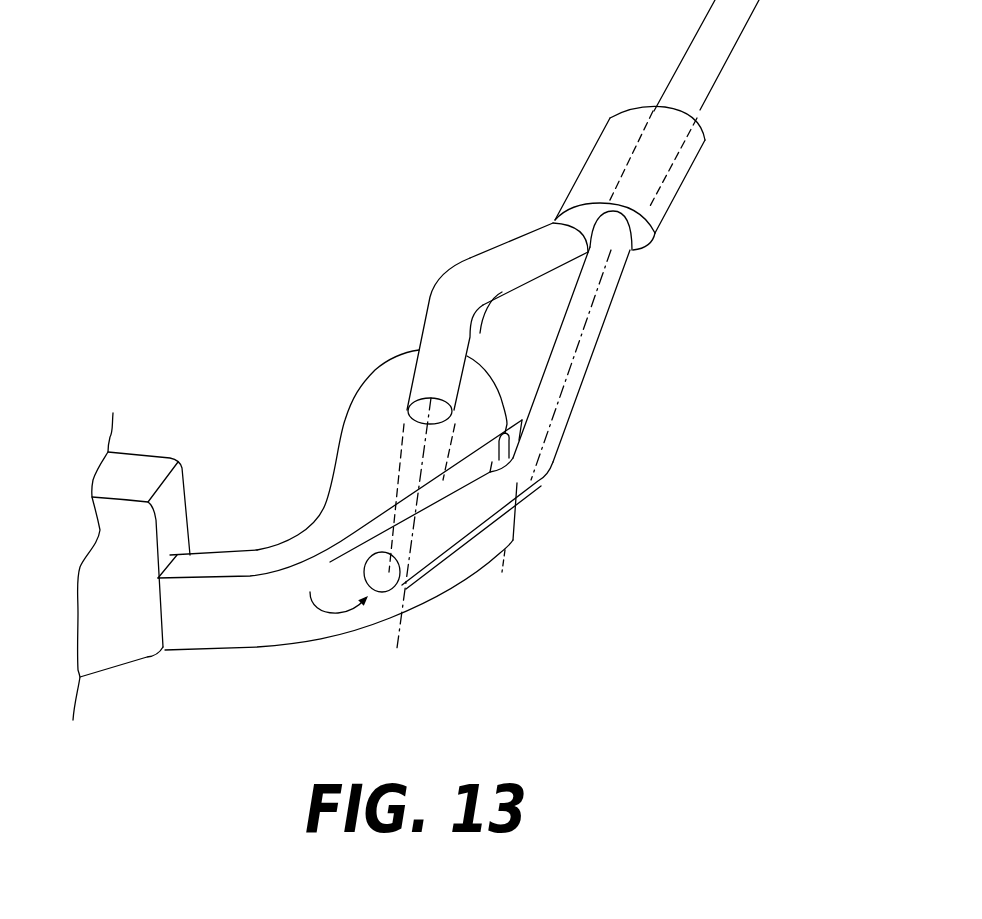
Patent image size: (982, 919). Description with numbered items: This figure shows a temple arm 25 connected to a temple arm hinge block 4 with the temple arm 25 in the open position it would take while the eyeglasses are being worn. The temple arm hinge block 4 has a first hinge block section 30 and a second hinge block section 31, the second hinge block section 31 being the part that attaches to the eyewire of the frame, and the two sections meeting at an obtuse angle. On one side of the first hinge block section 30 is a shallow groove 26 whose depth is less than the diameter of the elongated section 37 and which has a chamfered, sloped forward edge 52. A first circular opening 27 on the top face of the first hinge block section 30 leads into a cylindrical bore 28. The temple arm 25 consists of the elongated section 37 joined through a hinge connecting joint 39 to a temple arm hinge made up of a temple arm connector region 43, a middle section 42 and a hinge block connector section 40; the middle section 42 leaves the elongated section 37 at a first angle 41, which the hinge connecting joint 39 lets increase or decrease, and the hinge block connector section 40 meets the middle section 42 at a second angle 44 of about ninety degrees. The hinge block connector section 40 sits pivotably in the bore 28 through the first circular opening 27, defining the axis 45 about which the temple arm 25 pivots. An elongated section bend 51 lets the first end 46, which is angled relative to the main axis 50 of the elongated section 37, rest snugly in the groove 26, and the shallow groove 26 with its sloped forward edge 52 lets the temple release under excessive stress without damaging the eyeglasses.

The temple arm hinge block 4 is at (274, 663).
The temple arm 25 is at (762, 51).
The shallow groove 26 is at (369, 602).
The first circular opening 27 is at (401, 389).
The cylindrical bore 28 is at (386, 486).
The first hinge block section 30 is at (438, 602).
The second hinge block section 31 is at (225, 670).
The elongated section 37 is at (603, 295).
The hinge connecting joint 39 is at (684, 177).
The hinge block connector section 40 is at (410, 447).
The first angle 41 is at (530, 284).
The middle section 42 is at (503, 243).
The temple arm connector region 43 is at (612, 133).
The second angle 44 is at (490, 312).
The axis 45 is at (400, 628).
The first end 46 is at (457, 530).
The main axis 50 is at (535, 483).
The elongated section bend 51 is at (523, 420).
The forward edge 52 is at (318, 592).